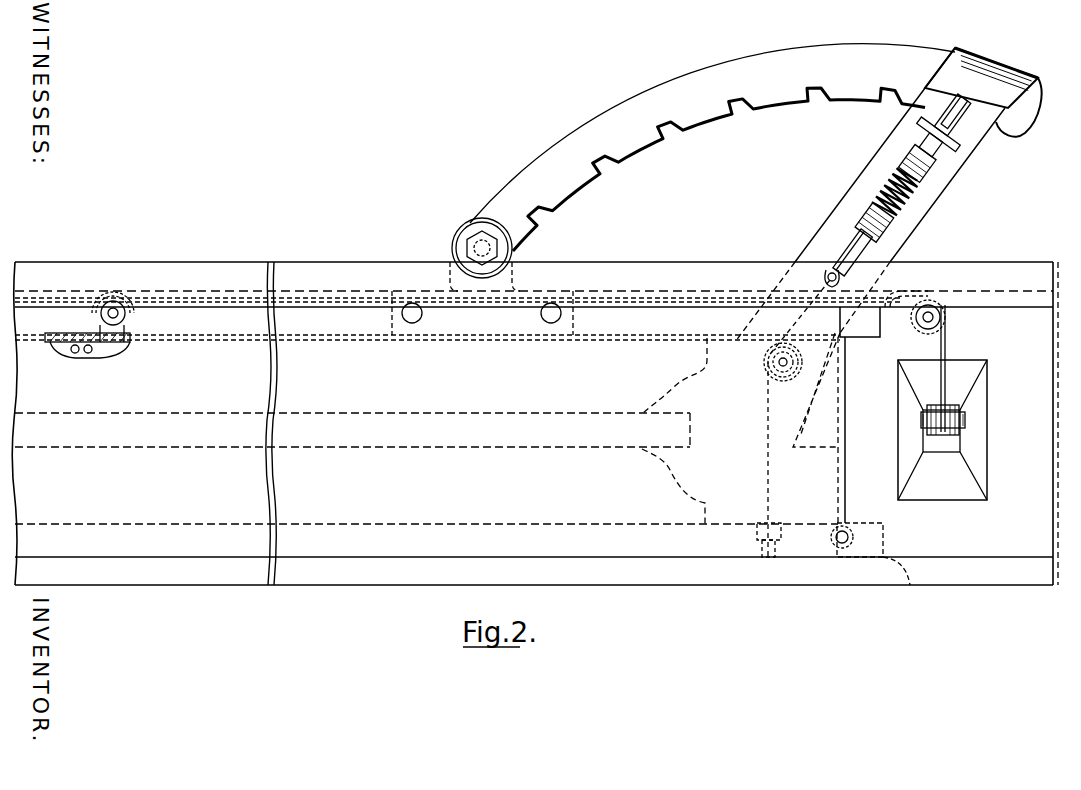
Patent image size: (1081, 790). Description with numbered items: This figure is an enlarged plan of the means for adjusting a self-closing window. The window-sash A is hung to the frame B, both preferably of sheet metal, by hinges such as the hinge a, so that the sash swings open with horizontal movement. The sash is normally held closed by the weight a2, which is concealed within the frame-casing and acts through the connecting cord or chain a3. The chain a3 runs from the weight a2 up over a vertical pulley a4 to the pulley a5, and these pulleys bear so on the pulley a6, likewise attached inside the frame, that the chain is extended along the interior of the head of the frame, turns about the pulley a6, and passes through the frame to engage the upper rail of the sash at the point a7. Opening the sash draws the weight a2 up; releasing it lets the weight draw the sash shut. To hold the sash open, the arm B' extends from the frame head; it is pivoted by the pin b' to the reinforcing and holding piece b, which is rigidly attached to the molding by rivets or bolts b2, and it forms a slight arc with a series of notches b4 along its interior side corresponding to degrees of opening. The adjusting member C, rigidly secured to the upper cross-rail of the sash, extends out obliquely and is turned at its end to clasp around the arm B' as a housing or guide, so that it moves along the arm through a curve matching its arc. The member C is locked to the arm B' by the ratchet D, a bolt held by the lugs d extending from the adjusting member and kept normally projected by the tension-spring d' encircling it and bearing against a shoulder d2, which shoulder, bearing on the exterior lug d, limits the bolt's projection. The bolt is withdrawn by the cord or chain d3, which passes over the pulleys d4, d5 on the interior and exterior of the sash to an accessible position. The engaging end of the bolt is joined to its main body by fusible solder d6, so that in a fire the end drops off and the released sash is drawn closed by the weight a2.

The window-sash A is at (674, 431).
The frame B is at (535, 443).
The arm B' is at (756, 133).
The adjusting member C is at (933, 203).
The ratchet D is at (852, 233).
The hinge a is at (842, 548).
The weight a2 is at (922, 490).
The connecting cord or chain a3 is at (946, 330).
The vertical pulley a4 is at (930, 395).
The pulley a5 is at (920, 322).
The pulley a6 is at (120, 302).
The point of engagement a7 is at (103, 346).
The reinforcing and holding piece b is at (482, 276).
The pin b' is at (466, 233).
The rivets or bolts b2 is at (553, 366).
The notches b4 is at (670, 152).
The lugs d is at (931, 220).
The tension-spring d' is at (873, 172).
The shoulder d2 is at (905, 168).
The cord or chain d3 is at (770, 432).
The pulley d4 is at (785, 368).
The pulley d5 is at (772, 556).
The fusible solder d6 is at (955, 140).